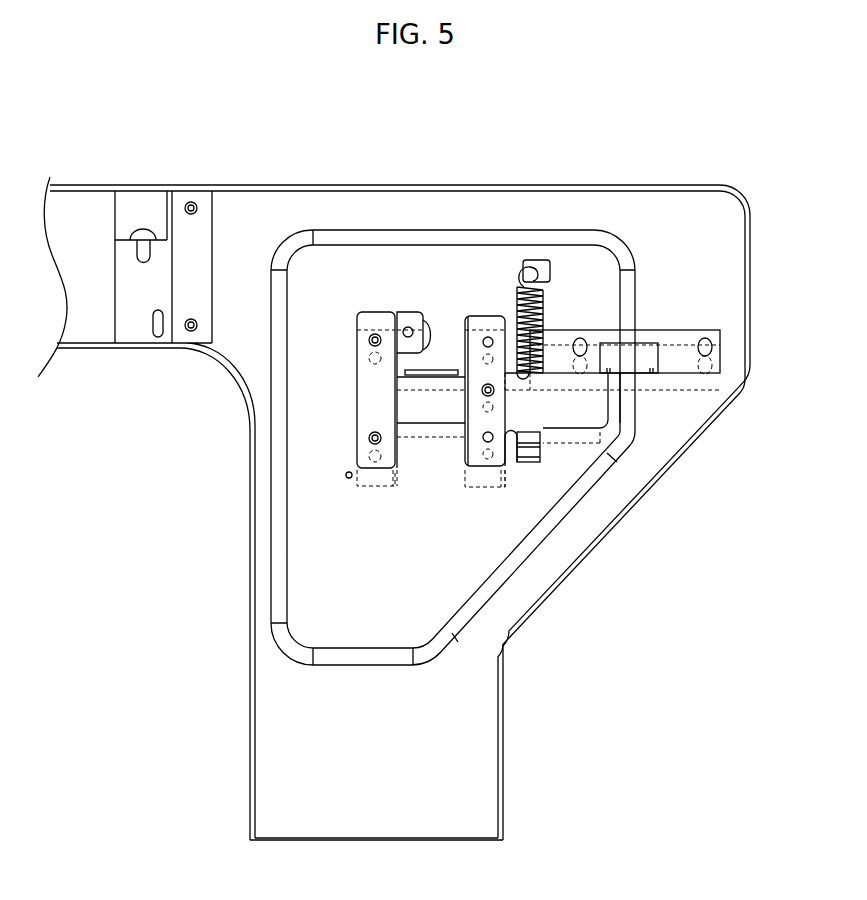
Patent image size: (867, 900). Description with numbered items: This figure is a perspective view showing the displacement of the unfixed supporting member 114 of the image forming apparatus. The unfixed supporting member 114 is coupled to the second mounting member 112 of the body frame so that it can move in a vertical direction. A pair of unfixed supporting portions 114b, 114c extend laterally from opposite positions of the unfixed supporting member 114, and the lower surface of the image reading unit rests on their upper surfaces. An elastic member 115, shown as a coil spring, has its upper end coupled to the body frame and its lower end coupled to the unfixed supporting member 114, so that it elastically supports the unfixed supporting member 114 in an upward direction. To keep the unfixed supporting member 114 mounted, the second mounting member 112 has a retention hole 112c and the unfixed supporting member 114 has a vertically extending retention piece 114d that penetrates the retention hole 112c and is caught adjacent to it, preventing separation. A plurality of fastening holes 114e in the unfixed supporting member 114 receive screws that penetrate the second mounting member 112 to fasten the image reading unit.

The second mounting member 112 is at (82, 180).
The retention hole 112c is at (513, 460).
The unfixed supporting member 114 is at (340, 413).
The unfixed supporting portion 114b is at (445, 370).
The unfixed supporting portion 114c is at (630, 373).
The retention piece 114d is at (530, 449).
The fastening hole 114e is at (407, 332).
The elastic member 115 is at (522, 287).